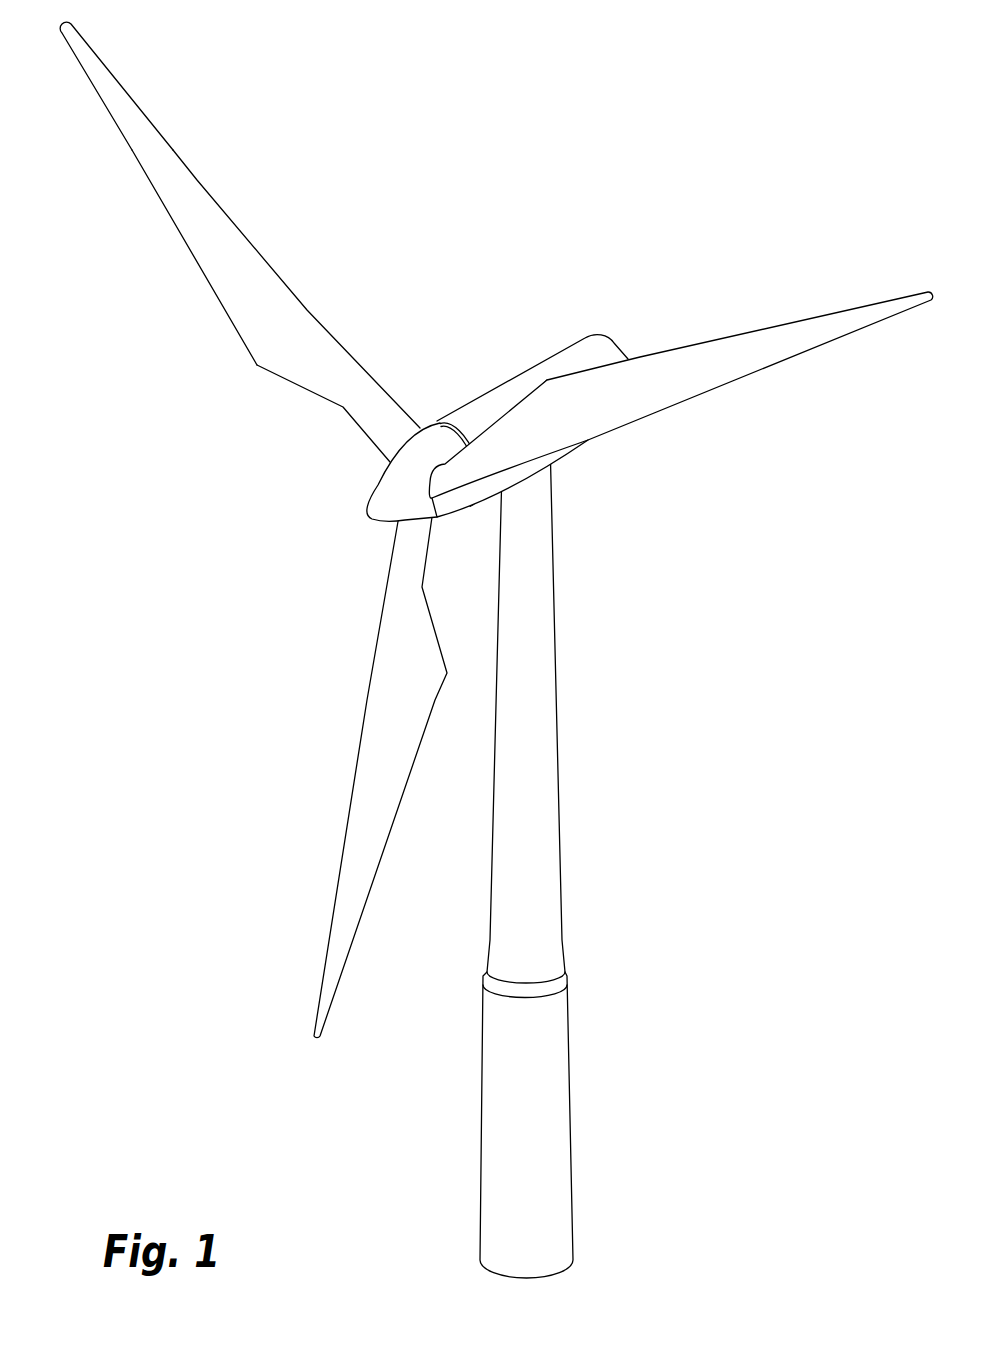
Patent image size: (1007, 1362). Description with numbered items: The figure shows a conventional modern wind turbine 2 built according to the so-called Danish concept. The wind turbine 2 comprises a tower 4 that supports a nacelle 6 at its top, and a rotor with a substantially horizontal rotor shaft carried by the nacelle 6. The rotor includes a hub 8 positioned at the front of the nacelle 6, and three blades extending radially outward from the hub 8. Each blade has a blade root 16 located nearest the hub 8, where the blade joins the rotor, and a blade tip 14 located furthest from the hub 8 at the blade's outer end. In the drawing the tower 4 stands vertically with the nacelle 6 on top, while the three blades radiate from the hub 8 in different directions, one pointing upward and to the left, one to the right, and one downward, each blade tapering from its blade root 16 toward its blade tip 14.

The wind turbine 2 is at (472, 650).
The tower 4 is at (545, 722).
The nacelle 6 is at (487, 403).
The hub 8 is at (387, 493).
The blade tip 14 is at (100, 80).
The blade root 16 is at (397, 445).